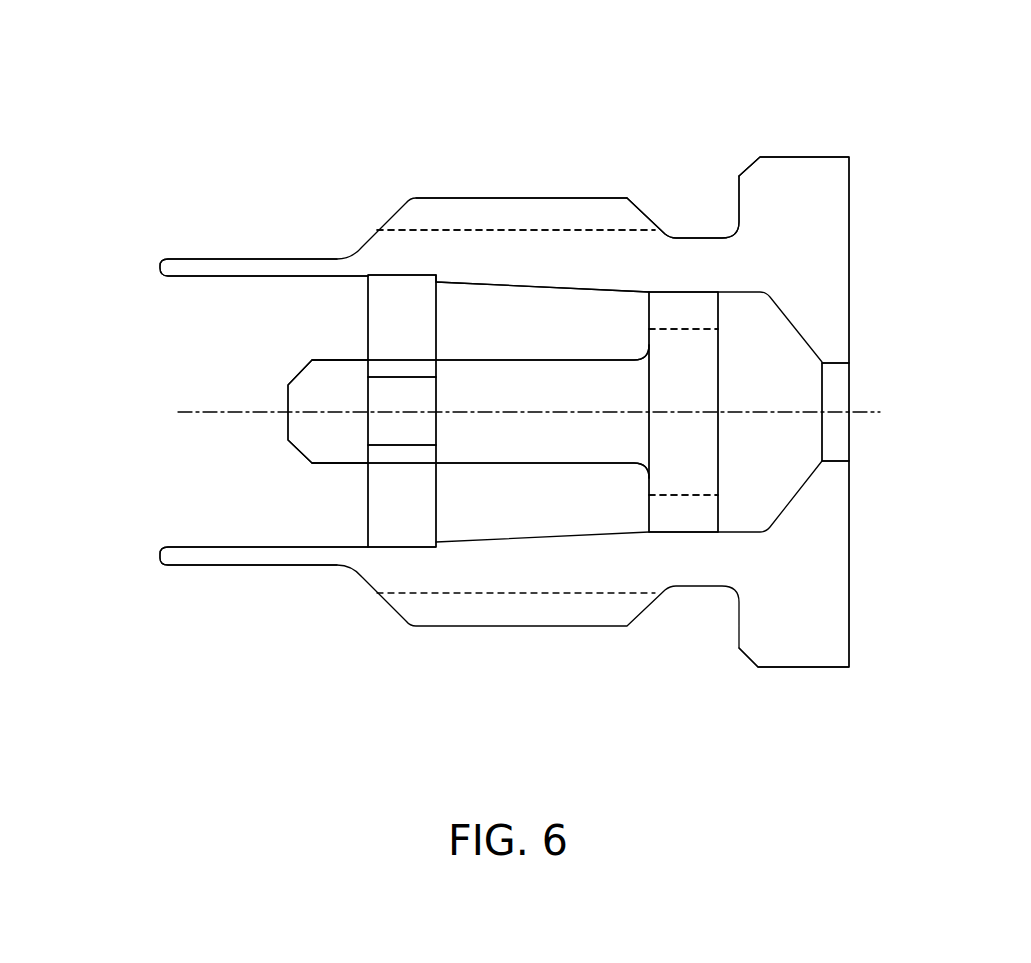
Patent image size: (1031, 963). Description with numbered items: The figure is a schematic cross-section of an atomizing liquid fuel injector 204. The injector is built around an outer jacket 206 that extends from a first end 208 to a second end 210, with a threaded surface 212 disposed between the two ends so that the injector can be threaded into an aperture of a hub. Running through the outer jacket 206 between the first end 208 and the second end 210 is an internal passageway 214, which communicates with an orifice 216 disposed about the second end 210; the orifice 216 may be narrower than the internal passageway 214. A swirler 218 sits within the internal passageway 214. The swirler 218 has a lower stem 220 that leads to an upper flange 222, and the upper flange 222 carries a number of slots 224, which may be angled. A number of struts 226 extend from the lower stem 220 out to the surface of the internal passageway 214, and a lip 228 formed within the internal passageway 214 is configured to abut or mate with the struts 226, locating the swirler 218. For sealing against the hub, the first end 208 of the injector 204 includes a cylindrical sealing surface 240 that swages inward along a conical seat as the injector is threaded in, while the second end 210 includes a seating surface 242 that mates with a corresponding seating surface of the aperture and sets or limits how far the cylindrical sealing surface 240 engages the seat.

The liquid fuel injector 204 is at (745, 72).
The outer jacket 206 is at (802, 665).
The first end 208 is at (156, 584).
The second end 210 is at (862, 132).
The threaded surface 212 is at (522, 198).
The internal passageway 214 is at (542, 344).
The orifice 216 is at (842, 393).
The swirler 218 is at (531, 447).
The lower stem 220 is at (337, 435).
The upper flange 222 is at (690, 478).
The slots 224 is at (675, 515).
The struts 226 is at (378, 335).
The lip 228 is at (437, 282).
The cylindrical sealing surface 240 is at (243, 259).
The seating surface 242 is at (739, 200).